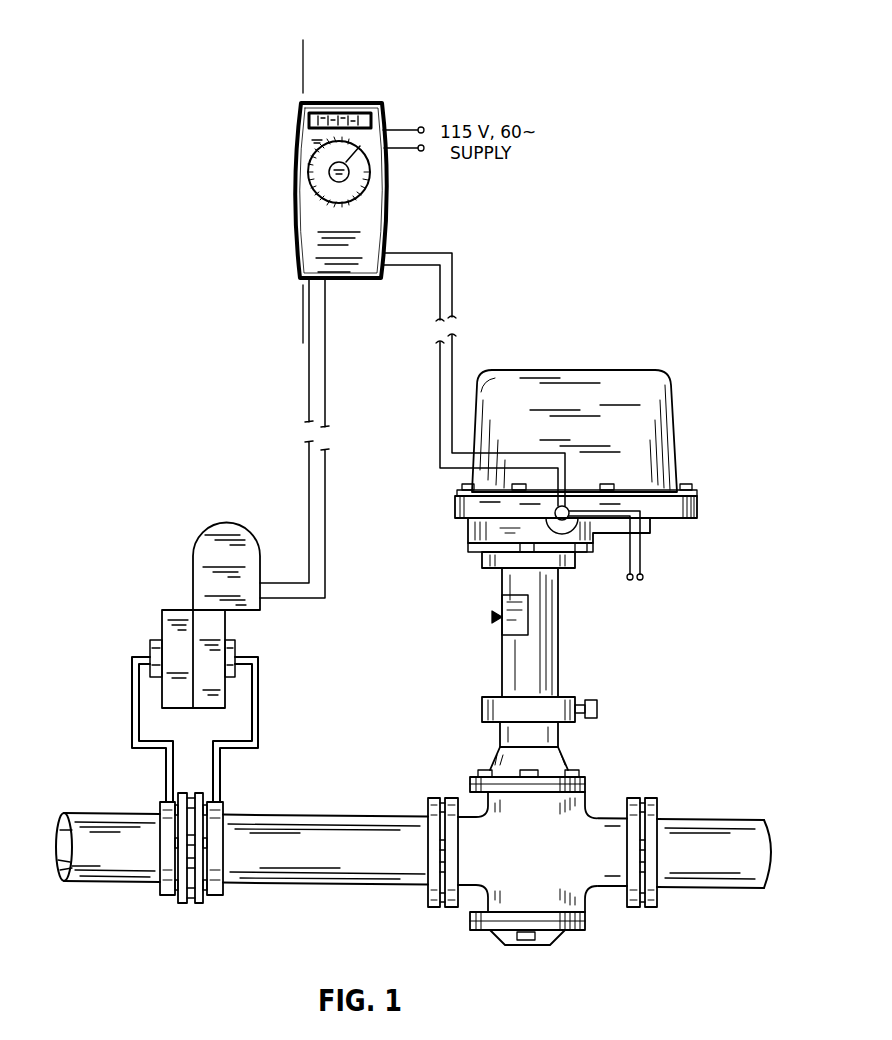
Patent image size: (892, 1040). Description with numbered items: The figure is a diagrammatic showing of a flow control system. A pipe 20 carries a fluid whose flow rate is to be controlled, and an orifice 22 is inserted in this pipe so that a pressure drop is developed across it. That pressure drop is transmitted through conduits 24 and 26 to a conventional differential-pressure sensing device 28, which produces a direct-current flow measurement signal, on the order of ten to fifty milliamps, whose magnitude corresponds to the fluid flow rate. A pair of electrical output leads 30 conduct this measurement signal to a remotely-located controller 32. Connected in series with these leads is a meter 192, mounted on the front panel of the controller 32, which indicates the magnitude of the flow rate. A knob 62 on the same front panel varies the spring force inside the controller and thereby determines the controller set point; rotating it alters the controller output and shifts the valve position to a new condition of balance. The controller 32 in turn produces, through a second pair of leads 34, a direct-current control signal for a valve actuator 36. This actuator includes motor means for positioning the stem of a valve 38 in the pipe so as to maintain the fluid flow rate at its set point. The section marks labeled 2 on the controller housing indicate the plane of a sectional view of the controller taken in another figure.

The section line 2- 2 is at (292, 57).
The pipe 20 is at (322, 833).
The orifice 22 is at (190, 905).
The conduit 24 is at (165, 772).
The conduit 26 is at (221, 777).
The differential-pressure sensing device 28 is at (255, 627).
The electrical output leads 30 is at (324, 486).
The controller 32 is at (256, 164).
The second pair of leads 34 is at (453, 289).
The valve actuator 36 is at (580, 352).
The valve 38 is at (600, 922).
The knob 62 is at (348, 175).
The meter 192 is at (346, 117).